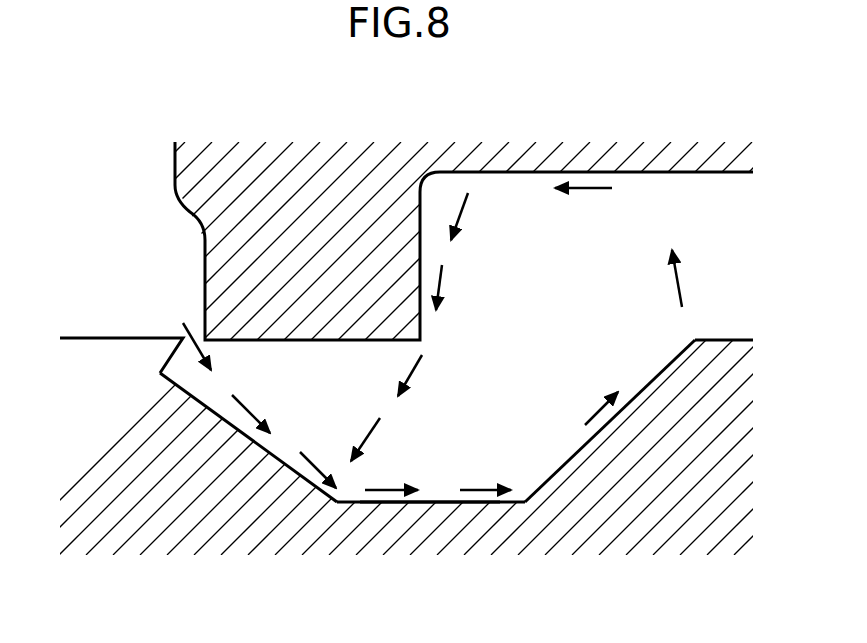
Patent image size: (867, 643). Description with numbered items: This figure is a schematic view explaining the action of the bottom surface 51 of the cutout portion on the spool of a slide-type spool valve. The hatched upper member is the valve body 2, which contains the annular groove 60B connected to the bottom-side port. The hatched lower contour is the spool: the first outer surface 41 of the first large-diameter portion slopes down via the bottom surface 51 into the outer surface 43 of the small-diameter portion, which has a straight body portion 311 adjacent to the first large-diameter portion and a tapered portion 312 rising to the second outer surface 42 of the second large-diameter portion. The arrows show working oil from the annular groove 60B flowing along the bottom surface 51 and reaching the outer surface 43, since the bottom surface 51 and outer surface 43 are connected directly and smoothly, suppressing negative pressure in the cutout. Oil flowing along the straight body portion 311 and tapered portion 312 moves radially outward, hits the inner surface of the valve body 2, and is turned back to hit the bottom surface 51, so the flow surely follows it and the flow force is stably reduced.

The valve body 2 is at (305, 170).
The annular groove 60B is at (133, 223).
The first outer surface 41 is at (105, 338).
The second outer surface 42 is at (735, 340).
The outer surface 43 is at (428, 500).
The bottom surface 51 is at (268, 460).
The straight body portion 311 is at (447, 498).
The tapered portion 312 is at (655, 376).